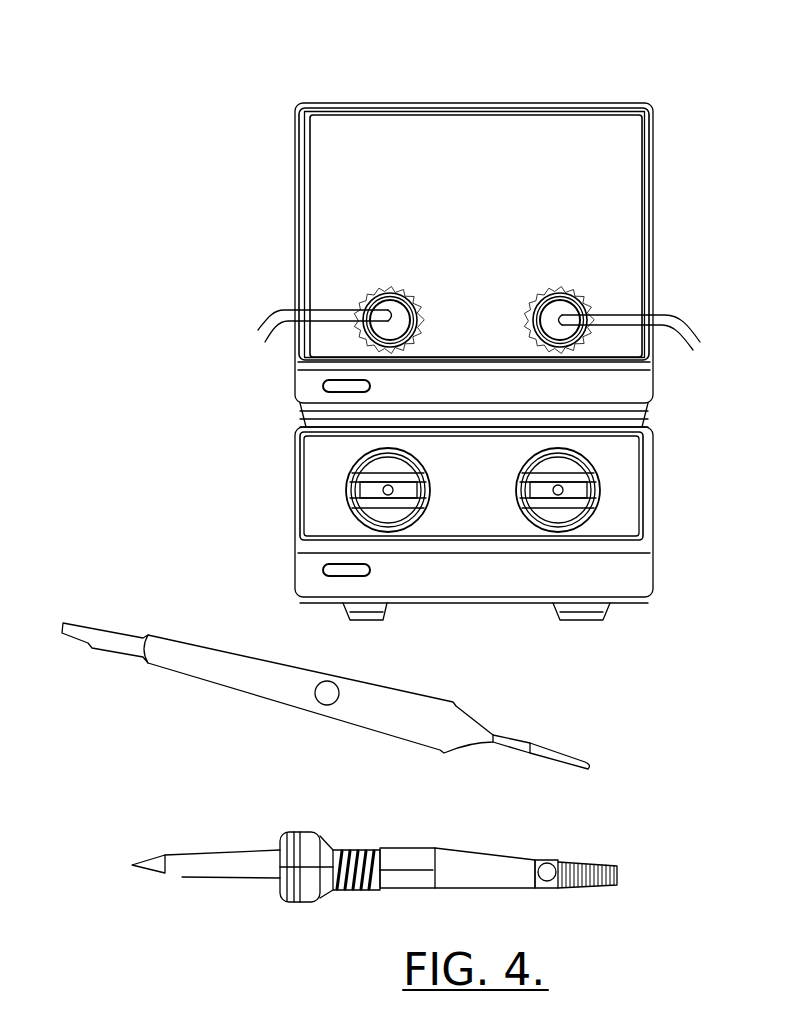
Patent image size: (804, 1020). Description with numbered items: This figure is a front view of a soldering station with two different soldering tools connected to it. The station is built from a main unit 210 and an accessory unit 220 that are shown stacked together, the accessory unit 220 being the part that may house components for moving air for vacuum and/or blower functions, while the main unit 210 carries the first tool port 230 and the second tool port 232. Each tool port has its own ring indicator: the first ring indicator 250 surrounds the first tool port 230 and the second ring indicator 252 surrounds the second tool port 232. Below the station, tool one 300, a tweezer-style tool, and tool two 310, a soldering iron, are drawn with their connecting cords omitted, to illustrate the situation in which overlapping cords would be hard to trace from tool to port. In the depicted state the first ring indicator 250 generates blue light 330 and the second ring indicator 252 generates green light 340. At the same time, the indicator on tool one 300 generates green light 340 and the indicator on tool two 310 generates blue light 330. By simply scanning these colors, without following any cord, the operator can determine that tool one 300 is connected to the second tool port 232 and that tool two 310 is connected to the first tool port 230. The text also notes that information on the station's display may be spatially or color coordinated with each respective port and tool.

The main unit 210 is at (593, 112).
The accessory unit 220 is at (632, 488).
The first tool port 230 is at (360, 292).
The second tool port 232 is at (592, 293).
The first ring indicator 250 is at (402, 290).
The second ring indicator 252 is at (562, 293).
The tool one 300 is at (434, 702).
The tool two 310 is at (376, 892).
The blue light 330 is at (552, 867).
The green light 340 is at (332, 707).